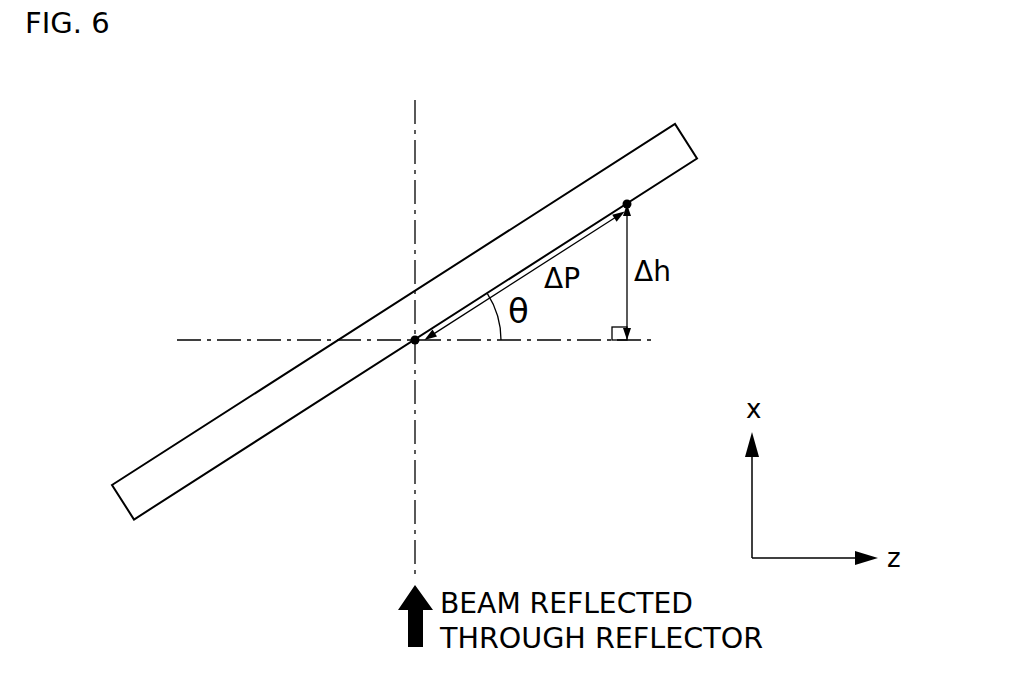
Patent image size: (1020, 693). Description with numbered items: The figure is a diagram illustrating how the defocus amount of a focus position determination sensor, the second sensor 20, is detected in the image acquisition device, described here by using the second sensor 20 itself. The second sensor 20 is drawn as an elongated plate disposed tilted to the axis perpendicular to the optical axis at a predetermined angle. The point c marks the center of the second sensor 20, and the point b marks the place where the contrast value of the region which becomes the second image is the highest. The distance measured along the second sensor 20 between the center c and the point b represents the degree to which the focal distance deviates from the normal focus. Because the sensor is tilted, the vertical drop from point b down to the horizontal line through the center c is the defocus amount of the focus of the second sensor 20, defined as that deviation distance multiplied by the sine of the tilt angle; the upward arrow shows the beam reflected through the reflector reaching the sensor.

The second sensor 20 is at (147, 470).
The point of highest contrast value b is at (631, 204).
The center of the second sensor c is at (418, 343).